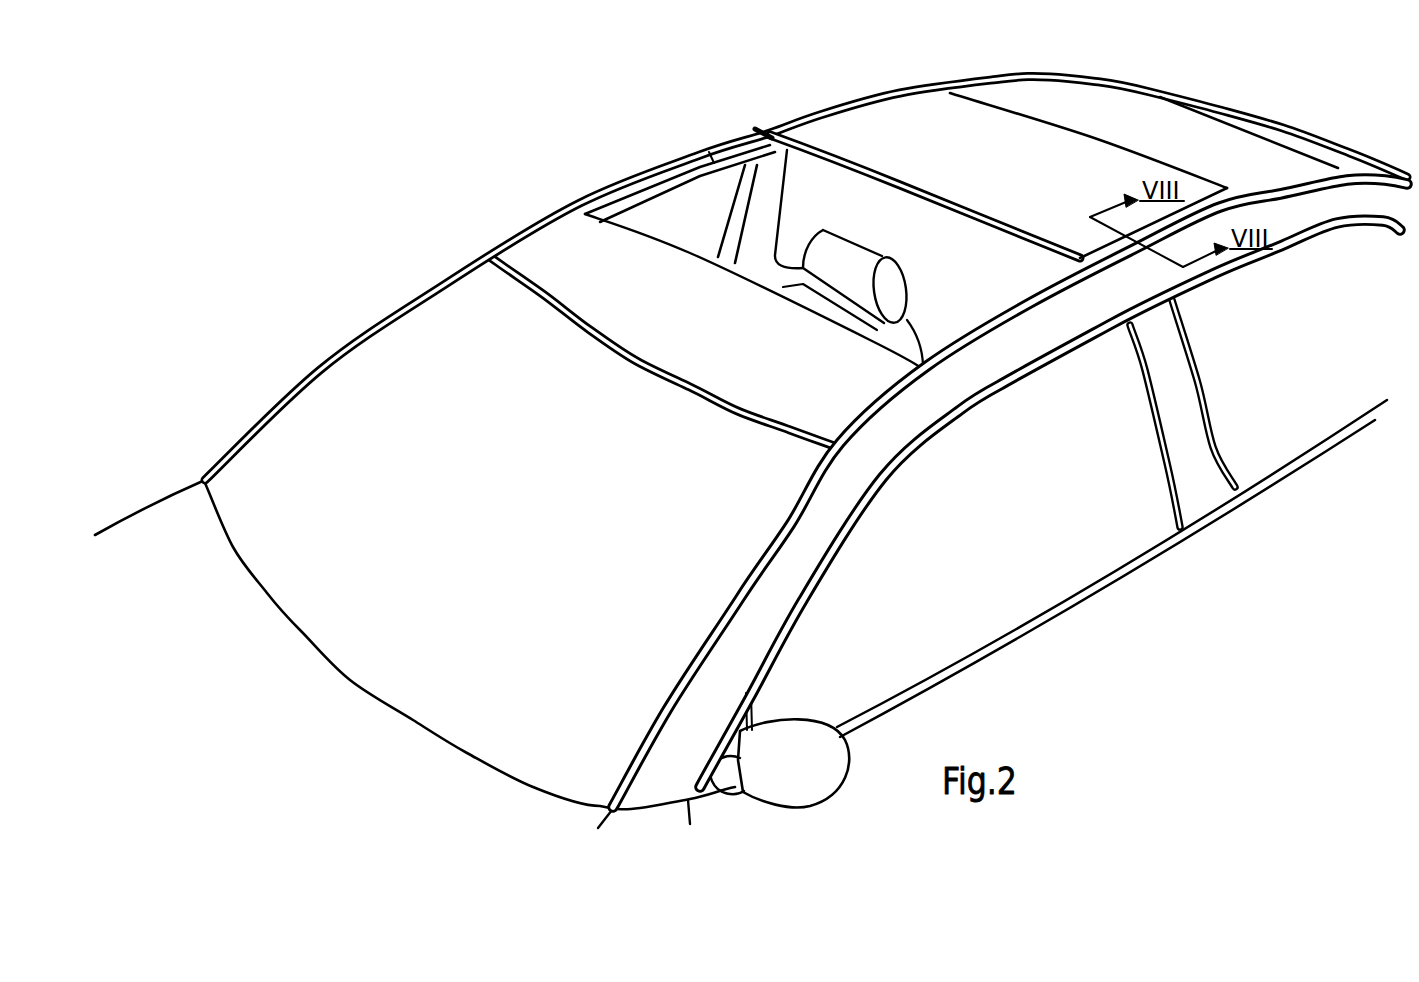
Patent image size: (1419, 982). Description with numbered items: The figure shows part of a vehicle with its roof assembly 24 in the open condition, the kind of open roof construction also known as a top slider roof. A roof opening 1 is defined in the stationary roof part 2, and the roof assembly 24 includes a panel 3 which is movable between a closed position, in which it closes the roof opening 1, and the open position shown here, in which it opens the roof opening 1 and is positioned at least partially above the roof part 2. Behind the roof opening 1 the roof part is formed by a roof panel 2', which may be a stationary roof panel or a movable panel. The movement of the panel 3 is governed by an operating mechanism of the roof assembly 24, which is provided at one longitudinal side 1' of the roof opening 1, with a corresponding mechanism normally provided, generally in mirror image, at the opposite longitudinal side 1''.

The roof opening 1 is at (680, 165).
The longitudinal side of the roof opening 1' is at (1010, 493).
The opposite longitudinal side of the roof opening 1'' is at (741, 95).
The roof part 2 is at (806, 278).
The roof panel 2' is at (1143, 107).
The panel 3 is at (890, 125).
The roof assembly 24 is at (604, 158).